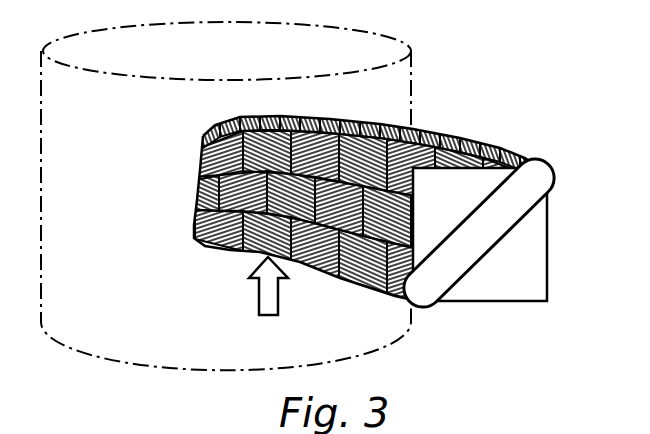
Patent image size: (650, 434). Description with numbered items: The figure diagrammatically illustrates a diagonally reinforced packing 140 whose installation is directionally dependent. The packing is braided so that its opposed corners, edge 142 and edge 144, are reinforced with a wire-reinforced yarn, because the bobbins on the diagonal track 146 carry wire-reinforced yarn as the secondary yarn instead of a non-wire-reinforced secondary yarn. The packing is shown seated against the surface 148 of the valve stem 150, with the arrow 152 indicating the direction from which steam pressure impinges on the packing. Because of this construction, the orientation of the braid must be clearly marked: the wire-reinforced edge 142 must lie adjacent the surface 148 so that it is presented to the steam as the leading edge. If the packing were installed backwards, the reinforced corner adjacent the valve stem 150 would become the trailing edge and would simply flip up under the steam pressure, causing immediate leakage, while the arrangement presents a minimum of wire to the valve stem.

The diagonally reinforced packing 140 is at (507, 306).
The edge 142 is at (354, 219).
The edge 144 is at (483, 143).
The diagonal track 146 is at (528, 212).
The surface 148 is at (203, 190).
The valve stem 150 is at (388, 98).
The arrow 152 is at (258, 296).